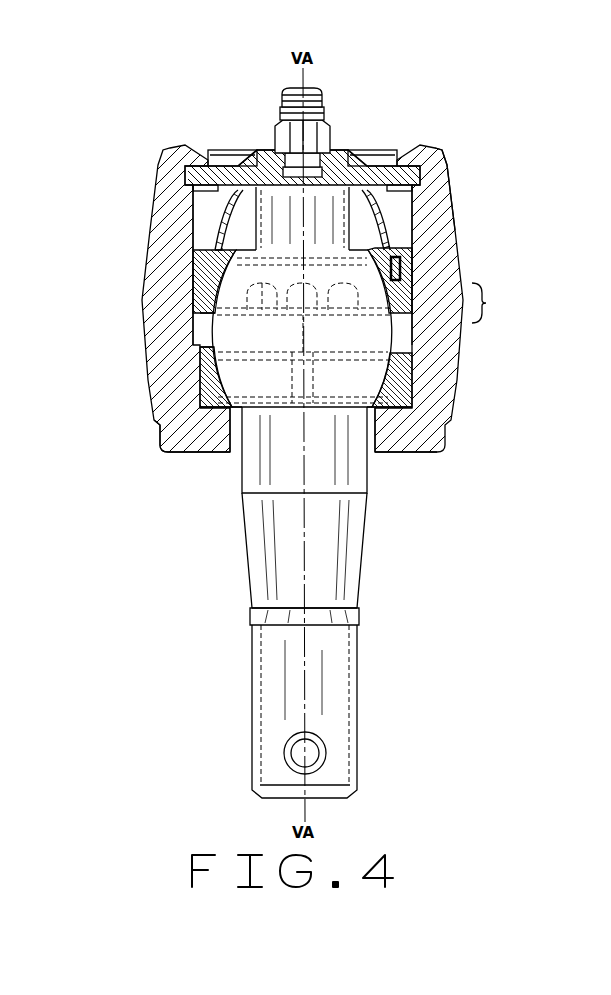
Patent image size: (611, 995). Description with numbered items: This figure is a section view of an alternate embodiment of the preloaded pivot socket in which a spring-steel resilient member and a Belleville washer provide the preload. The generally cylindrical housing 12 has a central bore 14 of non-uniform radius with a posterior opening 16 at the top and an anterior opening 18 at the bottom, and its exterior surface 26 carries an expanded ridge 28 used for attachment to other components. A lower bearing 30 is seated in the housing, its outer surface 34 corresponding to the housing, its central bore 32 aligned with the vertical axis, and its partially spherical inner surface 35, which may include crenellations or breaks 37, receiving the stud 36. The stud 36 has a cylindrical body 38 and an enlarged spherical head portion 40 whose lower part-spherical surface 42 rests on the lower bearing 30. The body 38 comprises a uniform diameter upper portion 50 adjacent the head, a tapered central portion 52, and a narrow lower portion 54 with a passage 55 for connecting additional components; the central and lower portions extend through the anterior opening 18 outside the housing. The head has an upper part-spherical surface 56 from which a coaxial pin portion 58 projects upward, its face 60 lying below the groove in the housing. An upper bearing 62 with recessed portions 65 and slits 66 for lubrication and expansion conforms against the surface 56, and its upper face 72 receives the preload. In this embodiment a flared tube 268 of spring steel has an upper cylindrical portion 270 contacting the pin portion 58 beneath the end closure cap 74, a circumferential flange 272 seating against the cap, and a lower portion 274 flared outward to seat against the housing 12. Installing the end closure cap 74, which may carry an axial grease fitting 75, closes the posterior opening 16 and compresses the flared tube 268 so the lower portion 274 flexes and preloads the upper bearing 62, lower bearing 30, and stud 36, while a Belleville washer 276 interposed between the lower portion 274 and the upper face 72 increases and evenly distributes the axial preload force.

The housing 12 is at (152, 409).
The central bore 14 is at (184, 345).
The posterior opening 16 is at (375, 163).
The anterior opening 18 is at (235, 453).
The exterior surface 26 is at (190, 366).
The expanded ridge 28 is at (496, 303).
The lower bearing 30 is at (385, 402).
The central bore 32 is at (218, 452).
The outer surface 34 is at (421, 380).
The inner surface 35 is at (165, 437).
The stud 36 is at (340, 445).
The crenellations or breaks 37 is at (285, 380).
The cylindrical body 38 is at (344, 590).
The head portion 40 is at (382, 330).
The lower part-spherical surface 42 is at (416, 453).
The upper portion 50 is at (368, 483).
The tapered central portion 52 is at (367, 546).
The lower portion 54 is at (358, 707).
The passage 55 is at (313, 752).
The upper part-spherical surface 56 is at (404, 290).
The pin portion 58 is at (322, 213).
The face 60 is at (261, 150).
The upper bearing 62 is at (195, 298).
The recessed portions 65 is at (252, 322).
The slits 66 is at (260, 269).
The upper face 72 is at (400, 273).
The end closure cap 74 is at (415, 150).
The grease fitting 75 is at (329, 85).
The flared tube 268 is at (450, 170).
The upper cylindrical portion 270 is at (200, 207).
The circumferential flange 272 is at (222, 189).
The lower portion 274 is at (198, 226).
The Belleville washer 276 is at (408, 258).